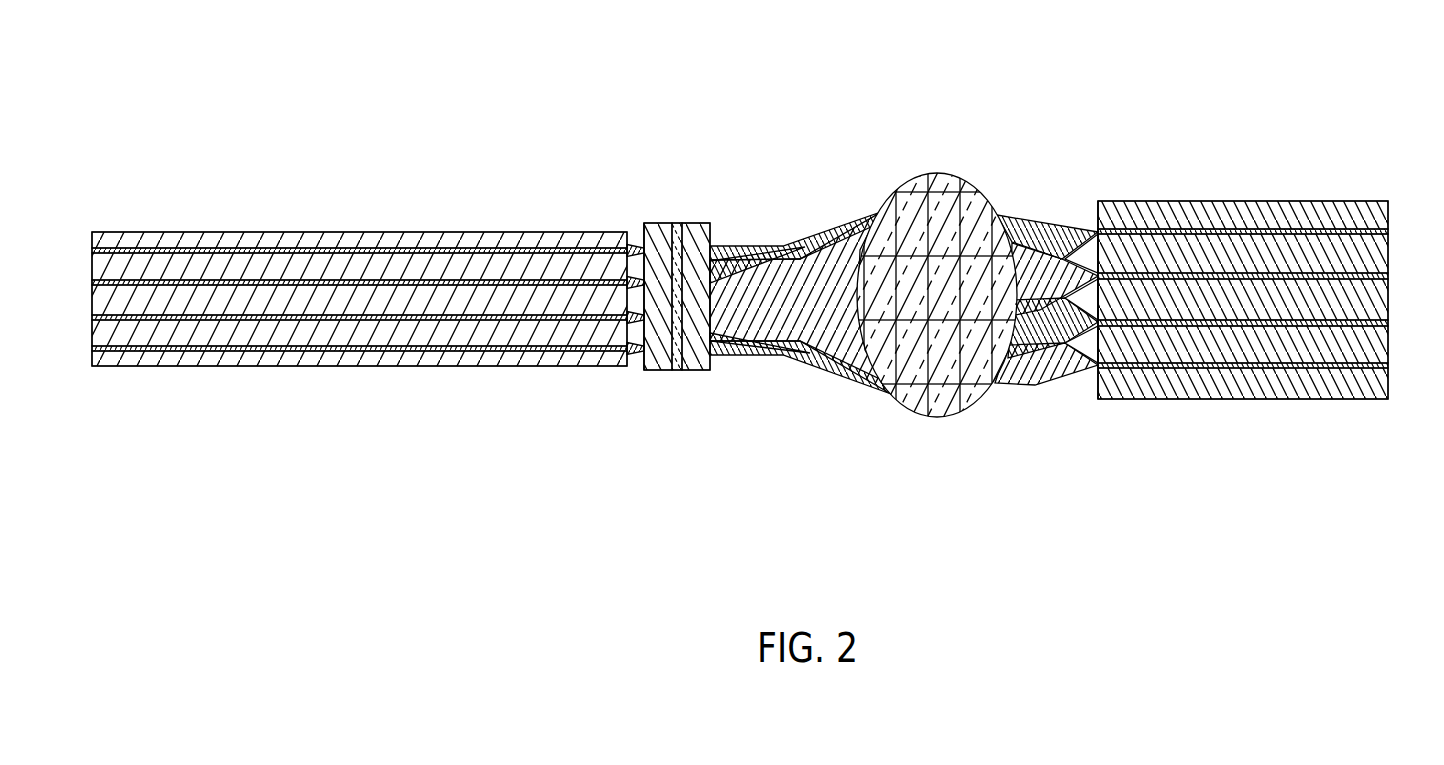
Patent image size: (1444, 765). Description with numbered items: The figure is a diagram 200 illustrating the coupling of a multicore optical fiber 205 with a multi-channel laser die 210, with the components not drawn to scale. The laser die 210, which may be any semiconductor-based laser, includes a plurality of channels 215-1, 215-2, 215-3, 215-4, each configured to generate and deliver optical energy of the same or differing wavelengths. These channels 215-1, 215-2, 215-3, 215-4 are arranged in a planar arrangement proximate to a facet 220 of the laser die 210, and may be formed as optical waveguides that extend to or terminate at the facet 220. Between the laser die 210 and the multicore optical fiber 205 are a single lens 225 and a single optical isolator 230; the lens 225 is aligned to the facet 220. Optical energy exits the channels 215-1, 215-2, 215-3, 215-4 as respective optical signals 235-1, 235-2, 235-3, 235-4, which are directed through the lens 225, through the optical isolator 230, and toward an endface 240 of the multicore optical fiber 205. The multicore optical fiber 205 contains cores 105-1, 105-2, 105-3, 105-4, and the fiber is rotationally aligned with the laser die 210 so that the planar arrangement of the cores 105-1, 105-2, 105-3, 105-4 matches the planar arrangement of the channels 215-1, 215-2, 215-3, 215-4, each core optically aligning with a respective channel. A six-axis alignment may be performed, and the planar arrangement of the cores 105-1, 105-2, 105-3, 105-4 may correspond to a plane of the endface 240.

The diagram 200 is at (766, 256).
The multicore optical fiber 205 is at (368, 288).
The core 105-1 is at (152, 352).
The core 105-2 is at (213, 317).
The core 105-3 is at (247, 280).
The core 105-4 is at (320, 250).
The optical isolator 230 is at (665, 292).
The endface 240 is at (632, 362).
The lens 225 is at (917, 173).
The optical signal 235-1 is at (1003, 212).
The optical signal 235-2 is at (1050, 262).
The optical signal 235-3 is at (1023, 350).
The optical signal 235-4 is at (1050, 360).
The facet 220 is at (1099, 201).
The multi-channel laser die 210 is at (1234, 287).
The channel 215-1 is at (1211, 231).
The channel 215-2 is at (1348, 277).
The channel 215-3 is at (1237, 322).
The channel 215-4 is at (1153, 367).